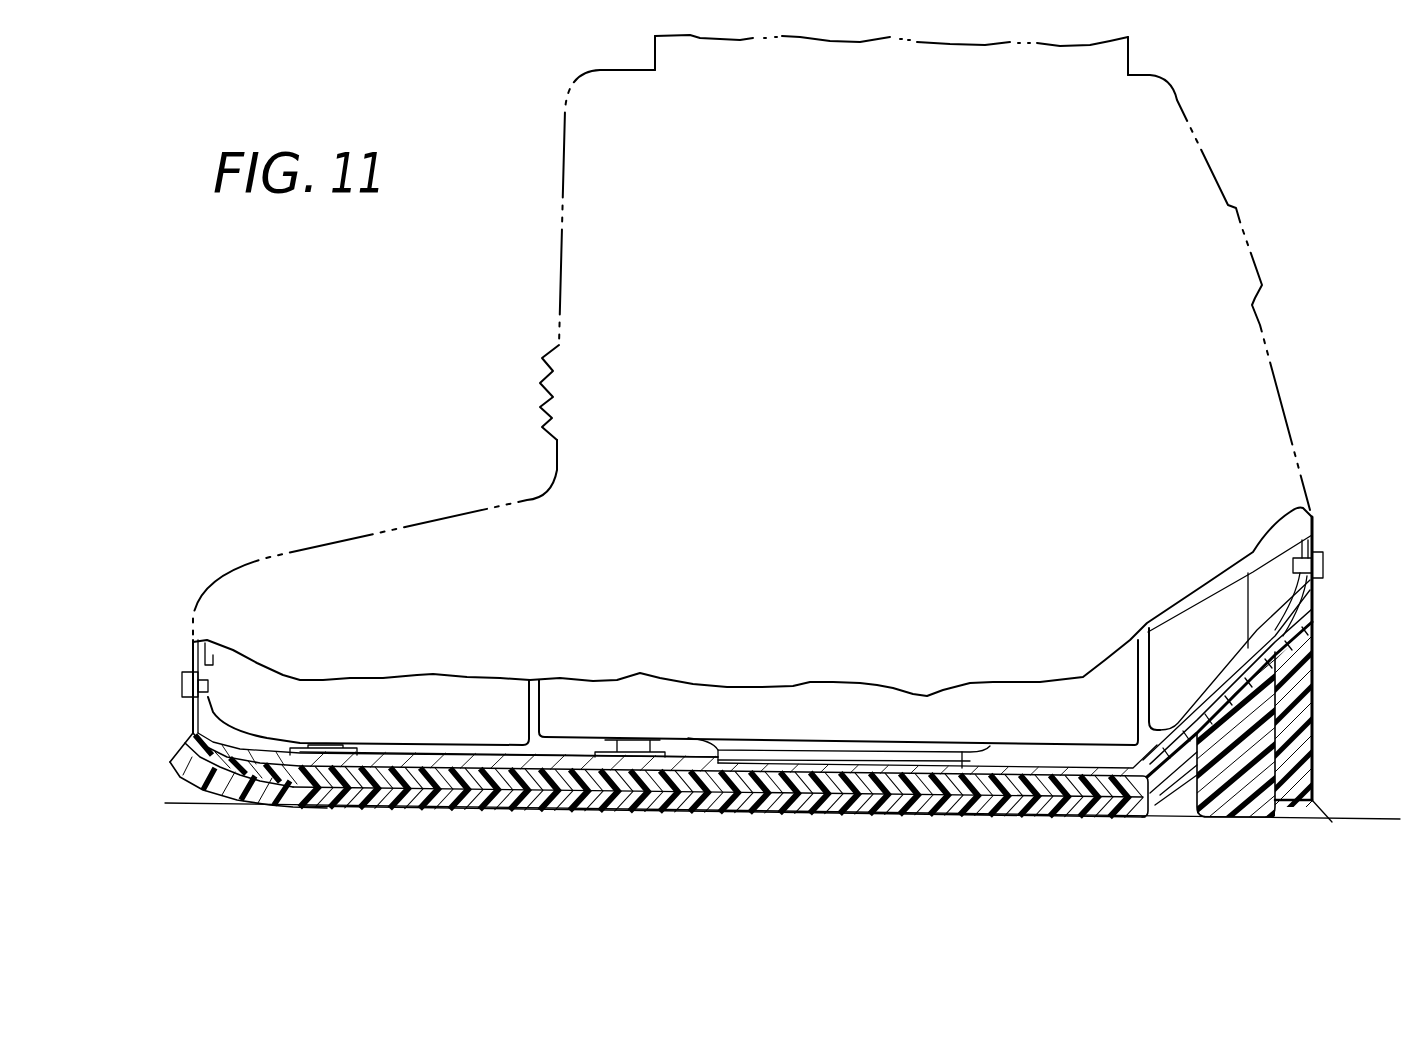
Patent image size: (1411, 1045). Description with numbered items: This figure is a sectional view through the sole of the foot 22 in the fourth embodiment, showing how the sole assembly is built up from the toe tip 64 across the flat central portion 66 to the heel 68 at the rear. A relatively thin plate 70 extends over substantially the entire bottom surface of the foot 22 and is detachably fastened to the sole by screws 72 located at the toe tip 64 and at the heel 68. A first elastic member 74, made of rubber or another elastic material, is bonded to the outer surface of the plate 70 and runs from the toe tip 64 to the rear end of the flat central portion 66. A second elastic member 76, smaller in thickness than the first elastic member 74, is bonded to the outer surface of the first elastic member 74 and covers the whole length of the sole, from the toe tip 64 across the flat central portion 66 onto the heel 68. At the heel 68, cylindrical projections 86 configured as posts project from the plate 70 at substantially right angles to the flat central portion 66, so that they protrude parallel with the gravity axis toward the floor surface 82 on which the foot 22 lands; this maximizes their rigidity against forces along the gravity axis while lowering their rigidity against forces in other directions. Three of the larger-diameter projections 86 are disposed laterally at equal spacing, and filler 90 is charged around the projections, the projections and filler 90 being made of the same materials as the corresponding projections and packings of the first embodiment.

The foot 22 is at (1323, 478).
The toe tip 64 is at (170, 773).
The flat central portion 66 is at (740, 820).
The heel 68 is at (1220, 830).
The plate 70 is at (1316, 593).
The screws 72 is at (182, 680).
The first elastic member 74 is at (188, 735).
The second elastic member 76 is at (423, 799).
The floor surface 82 is at (858, 884).
The projections 86 is at (1256, 792).
The filler 90 is at (1163, 786).